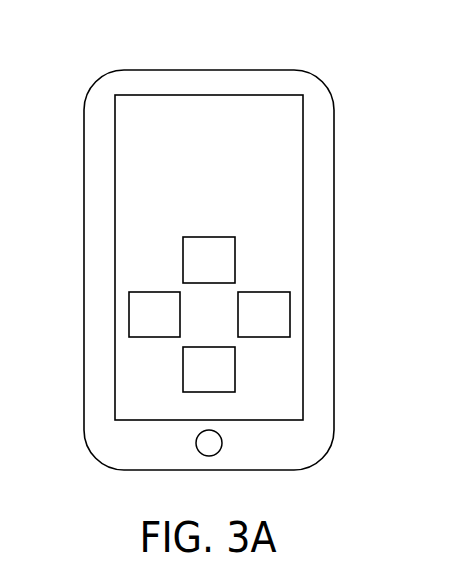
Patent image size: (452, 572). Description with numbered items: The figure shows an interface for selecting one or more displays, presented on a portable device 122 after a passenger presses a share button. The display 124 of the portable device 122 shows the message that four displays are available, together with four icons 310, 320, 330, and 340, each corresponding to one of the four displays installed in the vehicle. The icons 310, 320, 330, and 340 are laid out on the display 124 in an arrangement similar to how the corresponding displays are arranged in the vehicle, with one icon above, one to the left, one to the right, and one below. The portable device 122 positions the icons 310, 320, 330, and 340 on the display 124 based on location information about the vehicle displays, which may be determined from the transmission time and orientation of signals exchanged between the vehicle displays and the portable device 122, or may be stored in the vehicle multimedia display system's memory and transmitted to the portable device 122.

The portable device 122 is at (218, 69).
The display 124 is at (303, 203).
The icon 310 is at (207, 237).
The icon 320 is at (129, 313).
The icon 330 is at (290, 314).
The icon 340 is at (235, 368).